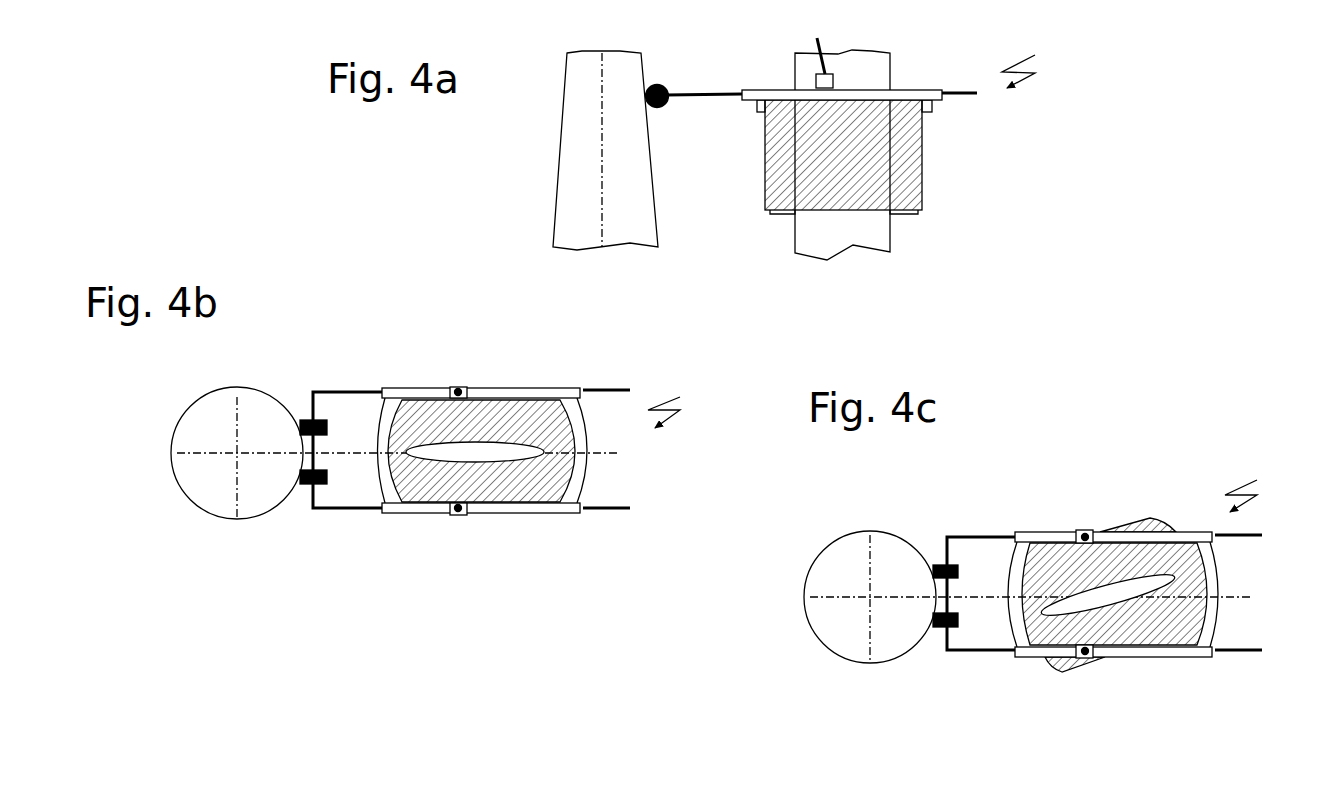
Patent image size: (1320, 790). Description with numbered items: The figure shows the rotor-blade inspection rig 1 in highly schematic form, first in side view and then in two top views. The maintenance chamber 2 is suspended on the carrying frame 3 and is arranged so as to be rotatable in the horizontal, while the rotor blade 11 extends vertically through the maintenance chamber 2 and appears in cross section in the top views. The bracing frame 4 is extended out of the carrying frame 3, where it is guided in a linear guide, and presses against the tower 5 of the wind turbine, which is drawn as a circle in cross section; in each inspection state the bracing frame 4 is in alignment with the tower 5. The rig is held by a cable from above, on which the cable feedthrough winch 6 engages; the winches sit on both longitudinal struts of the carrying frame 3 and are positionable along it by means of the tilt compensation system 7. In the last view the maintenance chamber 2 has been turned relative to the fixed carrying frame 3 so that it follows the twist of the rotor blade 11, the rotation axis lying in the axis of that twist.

In FIG. 4A, the rotor-blade inspection rig 1 is at (1034, 53).
In FIG. 4B, the rotor-blade inspection rig 1 is at (680, 393).
In FIG. 4C, the rotor-blade inspection rig 1 is at (1257, 478).
In FIG. 4A, the maintenance chamber 2 is at (922, 185).
In FIG. 4B, the maintenance chamber 2 is at (560, 472).
In FIG. 4C, the maintenance chamber 2 is at (1187, 623).
In FIG. 4A, the carrying frame 3 is at (757, 92).
In FIG. 4B, the carrying frame 3 is at (400, 505).
In FIG. 4C, the carrying frame 3 is at (1033, 533).
In FIG. 4A, the bracing frame 4 is at (703, 90).
In FIG. 4B, the bracing frame 4 is at (322, 388).
In FIG. 4C, the bracing frame 4 is at (968, 535).
In FIG. 4A, the tower 5 is at (573, 207).
In FIG. 4B, the tower 5 is at (203, 423).
In FIG. 4C, the tower 5 is at (847, 575).
In FIG. 4A, the cable feedthrough winch 6 is at (859, 53).
In FIG. 4B, the cable feedthrough winch 6 is at (459, 453).
In FIG. 4C, the cable feedthrough winch 6 is at (1101, 589).
In FIG. 4A, the tilt compensation system 7 is at (826, 73).
In FIG. 4B, the tilt compensation system 7 is at (462, 385).
In FIG. 4C, the tilt compensation system 7 is at (1082, 530).
In FIG. 4A, the rotor blade 11 is at (877, 223).
In FIG. 4B, the rotor blade 11 is at (498, 443).
In FIG. 4C, the rotor blade 11 is at (1133, 588).